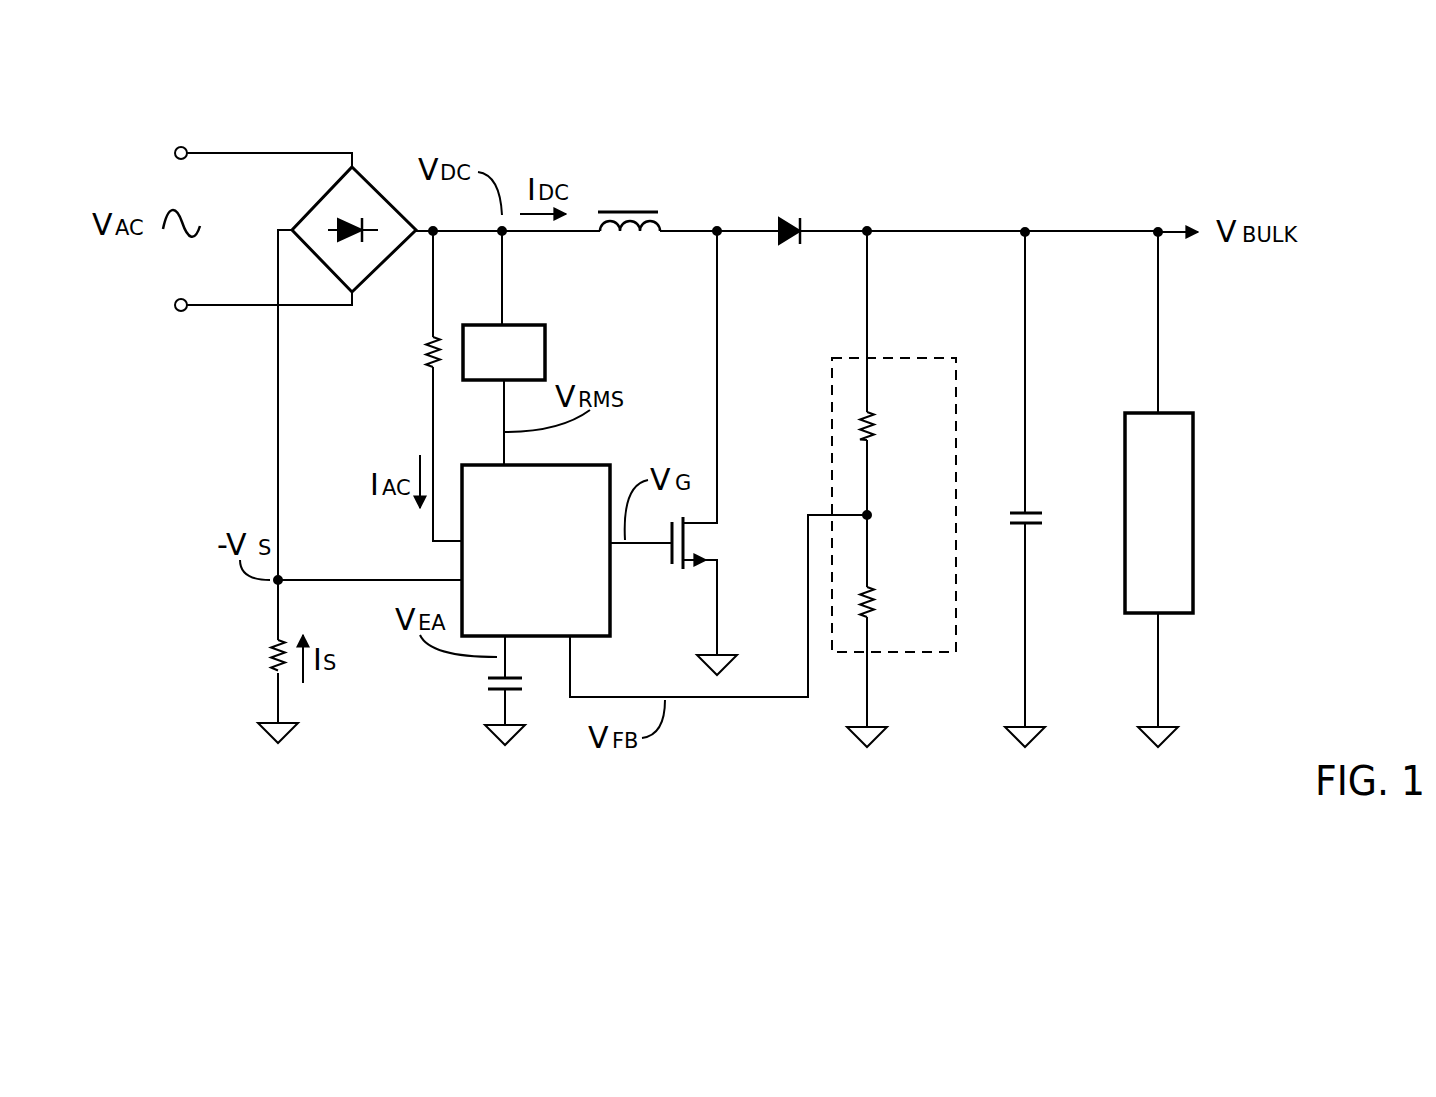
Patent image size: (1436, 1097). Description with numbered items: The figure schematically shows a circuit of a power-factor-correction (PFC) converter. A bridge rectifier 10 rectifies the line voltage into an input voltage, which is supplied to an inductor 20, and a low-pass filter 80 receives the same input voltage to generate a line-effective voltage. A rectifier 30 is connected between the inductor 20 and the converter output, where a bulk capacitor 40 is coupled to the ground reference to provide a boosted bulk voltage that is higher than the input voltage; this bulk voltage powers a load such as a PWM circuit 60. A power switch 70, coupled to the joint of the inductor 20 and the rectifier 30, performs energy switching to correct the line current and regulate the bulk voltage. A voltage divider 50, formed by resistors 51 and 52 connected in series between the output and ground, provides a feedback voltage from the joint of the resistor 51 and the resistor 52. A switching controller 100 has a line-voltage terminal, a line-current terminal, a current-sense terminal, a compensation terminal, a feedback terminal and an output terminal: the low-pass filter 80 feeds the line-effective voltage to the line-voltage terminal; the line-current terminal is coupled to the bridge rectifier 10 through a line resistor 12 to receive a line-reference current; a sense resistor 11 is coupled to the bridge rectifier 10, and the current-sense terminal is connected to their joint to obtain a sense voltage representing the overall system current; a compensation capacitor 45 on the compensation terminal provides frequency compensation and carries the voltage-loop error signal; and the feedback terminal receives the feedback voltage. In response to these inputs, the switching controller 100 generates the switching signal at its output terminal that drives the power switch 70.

The bridge rectifier 10 is at (370, 178).
The sense resistor 11 is at (265, 655).
The line resistor 12 is at (420, 352).
The inductor 20 is at (628, 204).
The rectifier 30 is at (793, 215).
The bulk capacitor 40 is at (1045, 515).
The compensation capacitor 45 is at (490, 683).
The voltage divider 50 is at (832, 418).
The resistor 51 is at (880, 425).
The resistor 52 is at (880, 610).
The PWM circuit 60 is at (1195, 515).
The power switch 70 is at (720, 540).
The low-pass filter 80 is at (548, 358).
The switching controller 100 is at (612, 605).